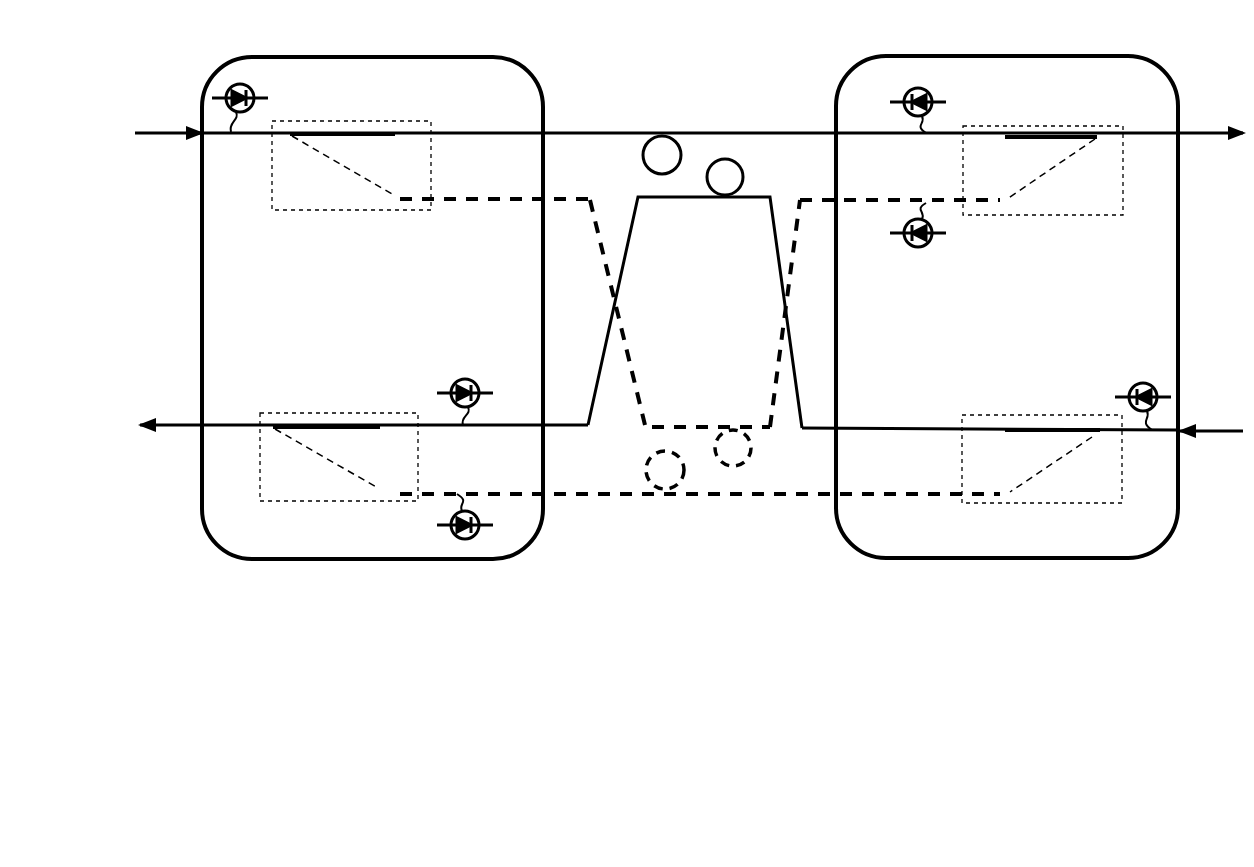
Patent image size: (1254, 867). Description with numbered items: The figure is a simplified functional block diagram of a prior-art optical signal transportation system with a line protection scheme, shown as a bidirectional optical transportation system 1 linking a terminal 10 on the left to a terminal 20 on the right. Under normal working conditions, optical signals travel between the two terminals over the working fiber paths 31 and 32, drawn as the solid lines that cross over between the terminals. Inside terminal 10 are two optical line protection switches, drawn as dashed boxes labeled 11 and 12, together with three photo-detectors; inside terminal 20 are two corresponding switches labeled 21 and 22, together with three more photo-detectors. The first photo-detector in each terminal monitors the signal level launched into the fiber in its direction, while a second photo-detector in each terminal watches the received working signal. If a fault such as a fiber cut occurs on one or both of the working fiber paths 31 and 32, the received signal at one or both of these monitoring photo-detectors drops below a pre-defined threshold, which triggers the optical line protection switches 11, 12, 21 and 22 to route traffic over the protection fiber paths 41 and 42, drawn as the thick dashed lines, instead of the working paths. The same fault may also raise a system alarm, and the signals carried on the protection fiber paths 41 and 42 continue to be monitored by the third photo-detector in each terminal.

The bidirectional optical transportation system 1 is at (690, 413).
The terminal 10 is at (372, 349).
The first optical switch SW1 11 is at (322, 211).
The second optical switch SW2 12 is at (322, 412).
The terminal 20 is at (1007, 349).
The third optical switch SW3 21 is at (1023, 414).
The fourth optical switch SW4 22 is at (1023, 216).
The working fiber path 31 is at (600, 131).
The working fiber path 32 is at (774, 212).
The protection fiber path 41 is at (775, 410).
The protection fiber path 42 is at (575, 497).